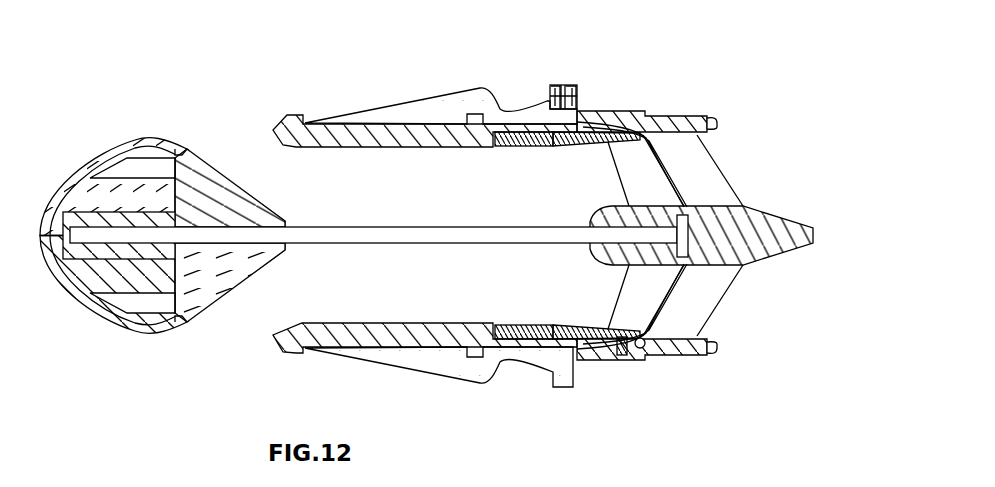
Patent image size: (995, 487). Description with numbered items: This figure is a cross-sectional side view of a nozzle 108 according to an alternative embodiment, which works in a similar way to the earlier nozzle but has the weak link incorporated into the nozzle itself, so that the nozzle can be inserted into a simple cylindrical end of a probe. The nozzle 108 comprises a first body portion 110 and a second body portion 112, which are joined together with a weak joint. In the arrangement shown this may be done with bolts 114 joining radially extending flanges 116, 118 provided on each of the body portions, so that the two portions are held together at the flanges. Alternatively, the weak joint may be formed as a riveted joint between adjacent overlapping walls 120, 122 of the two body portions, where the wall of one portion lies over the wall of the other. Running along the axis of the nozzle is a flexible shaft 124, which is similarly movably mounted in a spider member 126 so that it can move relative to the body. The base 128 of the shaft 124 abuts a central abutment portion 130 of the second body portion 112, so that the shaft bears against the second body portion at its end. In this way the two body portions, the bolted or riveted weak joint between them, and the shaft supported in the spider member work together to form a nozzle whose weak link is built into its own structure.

The nozzle 108 is at (340, 88).
The first body portion 110 is at (468, 87).
The second body portion 112 is at (672, 114).
The bolts 114 is at (578, 100).
The radially extending flange 116 is at (556, 85).
The radially extending flange 118 is at (574, 85).
The overlapping wall 120 is at (599, 362).
The overlapping wall 122 is at (643, 350).
The flexible shaft 124 is at (458, 230).
The spider member 126 is at (642, 174).
The base 128 is at (675, 257).
The central abutment portion 130 is at (748, 249).